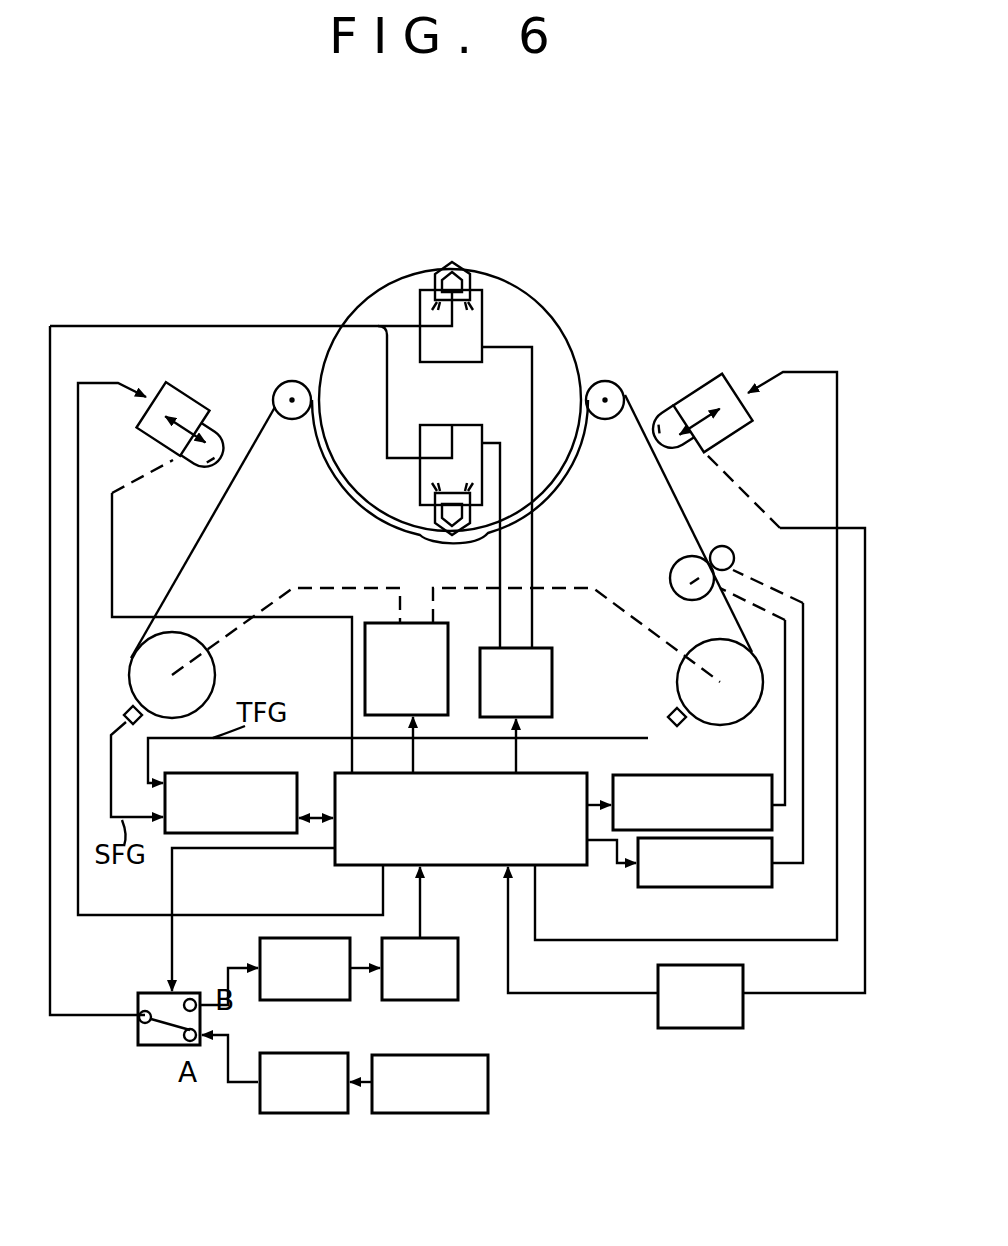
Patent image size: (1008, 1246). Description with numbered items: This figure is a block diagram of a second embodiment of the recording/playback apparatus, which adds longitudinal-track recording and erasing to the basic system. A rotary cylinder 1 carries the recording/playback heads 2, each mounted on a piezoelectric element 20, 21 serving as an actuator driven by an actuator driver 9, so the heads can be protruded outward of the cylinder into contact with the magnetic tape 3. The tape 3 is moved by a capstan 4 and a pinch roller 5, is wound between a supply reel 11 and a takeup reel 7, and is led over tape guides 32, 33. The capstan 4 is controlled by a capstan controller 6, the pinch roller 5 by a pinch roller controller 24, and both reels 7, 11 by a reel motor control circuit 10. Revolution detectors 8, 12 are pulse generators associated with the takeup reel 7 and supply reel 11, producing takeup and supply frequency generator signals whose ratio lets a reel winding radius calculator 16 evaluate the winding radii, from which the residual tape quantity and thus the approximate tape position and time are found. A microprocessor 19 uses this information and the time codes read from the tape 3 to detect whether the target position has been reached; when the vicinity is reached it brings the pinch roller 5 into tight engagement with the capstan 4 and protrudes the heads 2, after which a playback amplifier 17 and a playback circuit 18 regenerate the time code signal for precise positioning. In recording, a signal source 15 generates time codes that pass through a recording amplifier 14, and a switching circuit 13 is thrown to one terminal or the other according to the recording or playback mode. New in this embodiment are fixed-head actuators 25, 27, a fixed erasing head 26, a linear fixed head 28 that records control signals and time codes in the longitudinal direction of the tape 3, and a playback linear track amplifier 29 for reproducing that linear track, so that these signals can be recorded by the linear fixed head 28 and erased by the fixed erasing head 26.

The rotary cylinder 1 is at (532, 306).
The recording/playback head 2 is at (455, 262).
The magnetic tape 3 is at (637, 409).
The capstan 4 is at (735, 556).
The pinch roller 5 is at (672, 568).
The capstan controller 6 is at (745, 888).
The takeup reel 7 is at (678, 678).
The revolution detector 8 is at (668, 717).
The actuator driver 9 is at (552, 656).
The reel motor control circuit 10 is at (448, 636).
The supply reel 11 is at (216, 675).
The revolution detector 12 is at (126, 712).
The switching circuit 13 is at (190, 993).
The recording amplifier 14 is at (330, 1053).
The signal source 15 is at (462, 1114).
The reel winding radius calculator 16 is at (283, 774).
The playback amplifier 17 is at (290, 938).
The playback circuit 18 is at (458, 982).
The microprocessor 19 is at (470, 866).
The piezoelectric element 20 is at (428, 362).
The piezoelectric element 21 is at (458, 425).
The pinch roller controller 24 is at (712, 776).
The fixed-head actuator 25 is at (186, 392).
The fixed erasing head 26 is at (190, 460).
The fixed-head actuator 27 is at (750, 425).
The linear fixed head 28 is at (690, 455).
The playback linear track amplifier 29 is at (722, 1029).
The tape guide 32 is at (605, 381).
The tape guide 33 is at (292, 381).